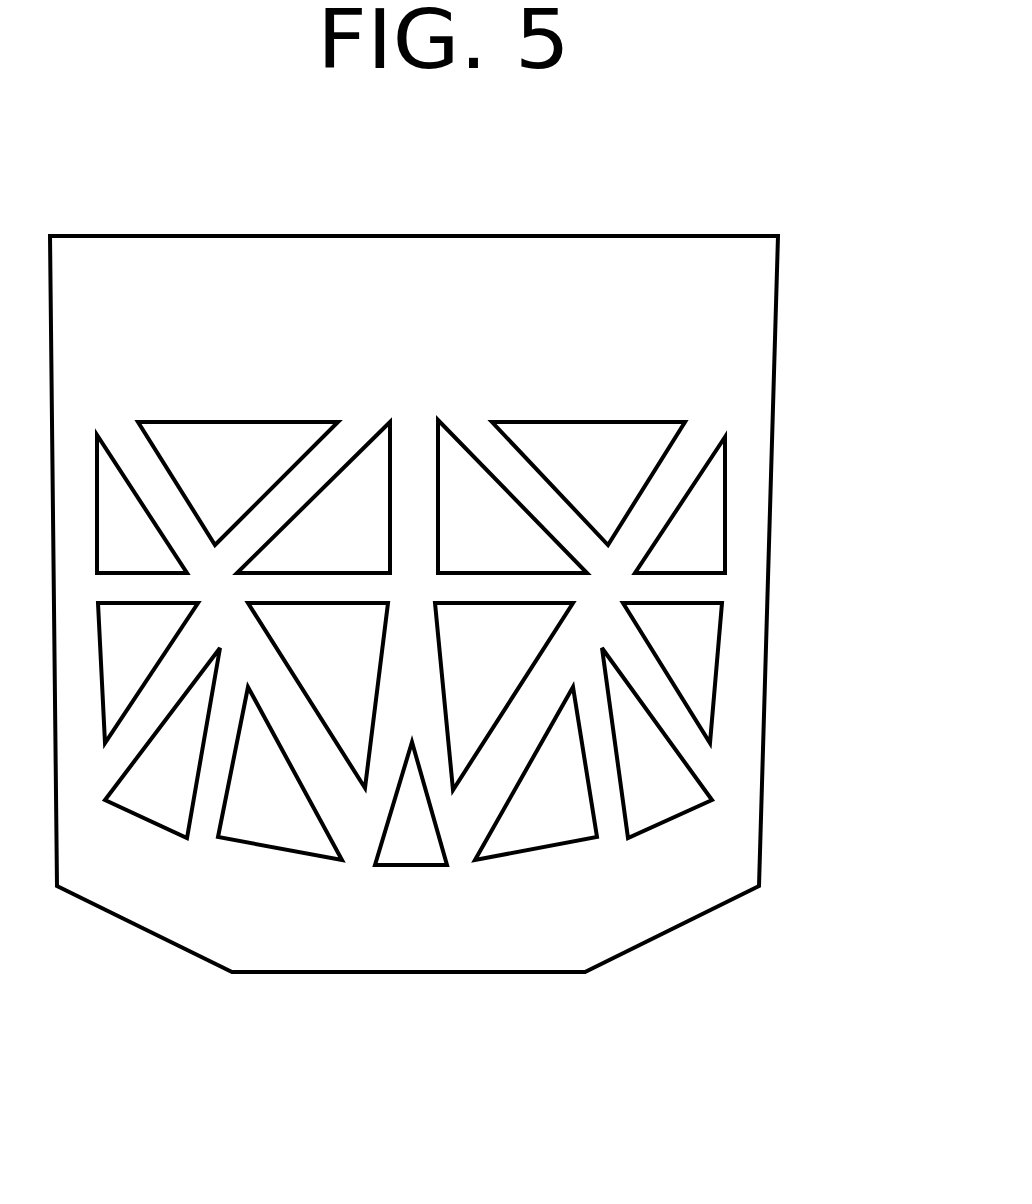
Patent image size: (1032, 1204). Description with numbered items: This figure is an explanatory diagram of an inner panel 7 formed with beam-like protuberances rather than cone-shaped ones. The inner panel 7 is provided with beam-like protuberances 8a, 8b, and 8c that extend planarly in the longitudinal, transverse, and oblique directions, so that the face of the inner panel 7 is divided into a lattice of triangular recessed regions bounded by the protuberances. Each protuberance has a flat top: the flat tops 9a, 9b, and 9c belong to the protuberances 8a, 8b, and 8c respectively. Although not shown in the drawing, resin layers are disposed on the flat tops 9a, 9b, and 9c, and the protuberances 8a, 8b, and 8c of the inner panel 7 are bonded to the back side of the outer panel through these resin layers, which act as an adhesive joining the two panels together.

The inner panel 7 is at (743, 353).
The beam-like protuberance 8a is at (527, 477).
The beam-like protuberance 8b is at (647, 523).
The beam-like protuberance 8c is at (683, 590).
The flat top 9a is at (605, 785).
The flat top 9b is at (490, 787).
The flat top 9c is at (670, 717).